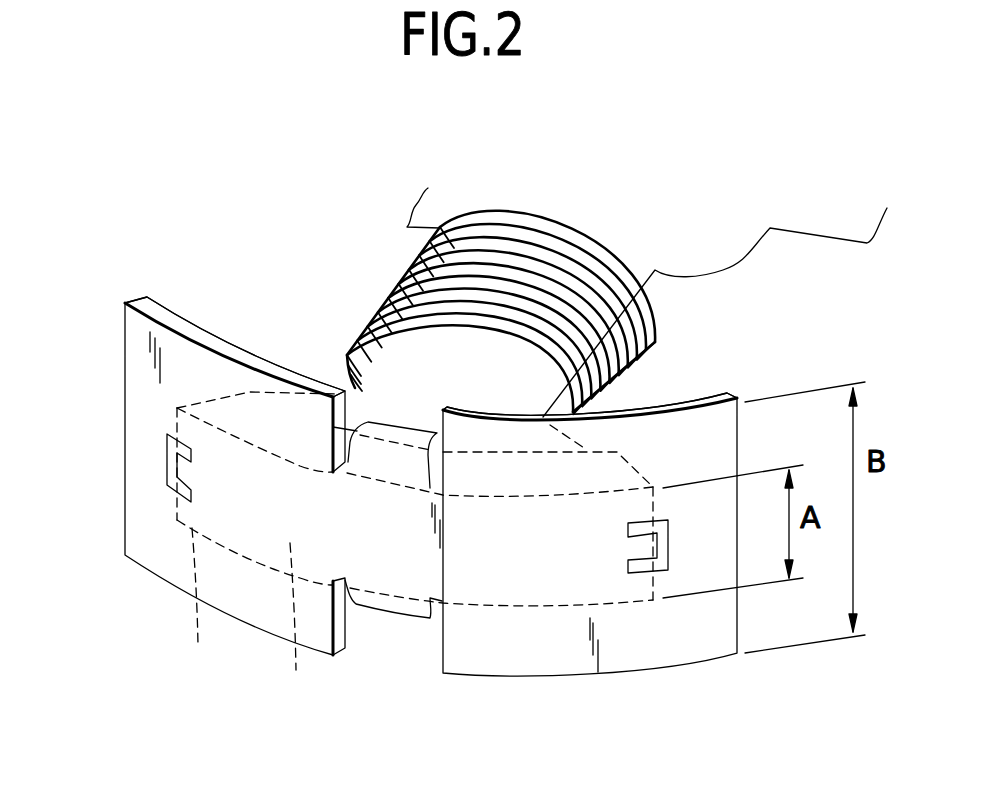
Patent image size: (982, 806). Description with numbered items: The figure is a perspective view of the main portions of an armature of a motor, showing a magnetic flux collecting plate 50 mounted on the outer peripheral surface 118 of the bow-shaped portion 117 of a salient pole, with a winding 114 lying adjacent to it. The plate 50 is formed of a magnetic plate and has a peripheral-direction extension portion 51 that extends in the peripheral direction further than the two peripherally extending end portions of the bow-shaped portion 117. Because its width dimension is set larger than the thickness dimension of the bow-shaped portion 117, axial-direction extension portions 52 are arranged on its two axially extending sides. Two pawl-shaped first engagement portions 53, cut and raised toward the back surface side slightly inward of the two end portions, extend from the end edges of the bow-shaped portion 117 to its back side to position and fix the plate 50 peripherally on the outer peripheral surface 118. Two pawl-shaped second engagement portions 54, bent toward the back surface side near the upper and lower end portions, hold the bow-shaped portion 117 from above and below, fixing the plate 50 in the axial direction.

The magnetic flux collecting plate 50 is at (397, 511).
The peripheral-direction extension portion 51 is at (207, 323).
The axial-direction extension portions 52 is at (107, 302).
The pawl-shaped first engagement portions 53 is at (175, 455).
The pawl-shaped second engagement portions 54 is at (407, 420).
The coil 114 is at (357, 203).
The bow-shaped portion 117 is at (191, 603).
The outer peripheral surface 118 is at (286, 623).